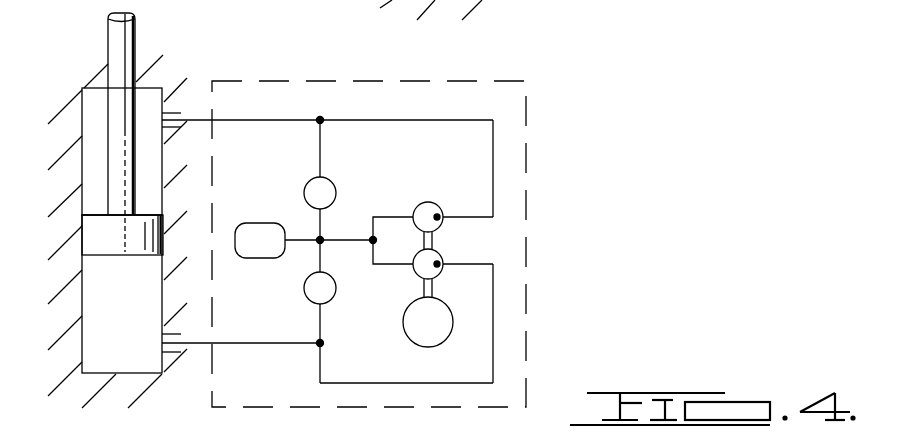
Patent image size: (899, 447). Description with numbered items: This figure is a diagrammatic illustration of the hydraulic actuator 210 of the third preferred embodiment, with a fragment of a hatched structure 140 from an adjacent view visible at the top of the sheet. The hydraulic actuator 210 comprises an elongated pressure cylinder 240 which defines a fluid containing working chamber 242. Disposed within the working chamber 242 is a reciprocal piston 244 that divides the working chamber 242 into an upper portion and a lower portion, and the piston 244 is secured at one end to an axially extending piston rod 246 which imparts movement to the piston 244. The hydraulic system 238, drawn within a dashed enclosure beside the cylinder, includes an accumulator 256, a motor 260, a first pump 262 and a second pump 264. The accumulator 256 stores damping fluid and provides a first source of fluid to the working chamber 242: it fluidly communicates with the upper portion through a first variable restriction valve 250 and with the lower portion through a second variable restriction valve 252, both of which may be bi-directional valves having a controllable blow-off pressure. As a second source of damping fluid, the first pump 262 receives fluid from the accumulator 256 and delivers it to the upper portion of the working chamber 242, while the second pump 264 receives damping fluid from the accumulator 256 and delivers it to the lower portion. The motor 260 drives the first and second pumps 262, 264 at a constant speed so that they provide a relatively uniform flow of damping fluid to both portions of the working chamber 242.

The hatched structure (adjacent figure fragment) 140 is at (503, 0).
The hydraulic actuator 210 is at (235, 63).
The hydraulic system 238 is at (527, 143).
The pressure cylinder 240 is at (141, 367).
The working chamber 242 is at (95, 110).
The reciprocal piston 244 is at (95, 225).
The piston rod 246 is at (133, 43).
The first variable restriction valve 250 is at (336, 184).
The second variable restriction valve 252 is at (308, 299).
The accumulator 256 is at (256, 232).
The motor 260 is at (428, 336).
The first pump 262 is at (430, 205).
The second pump 264 is at (418, 275).